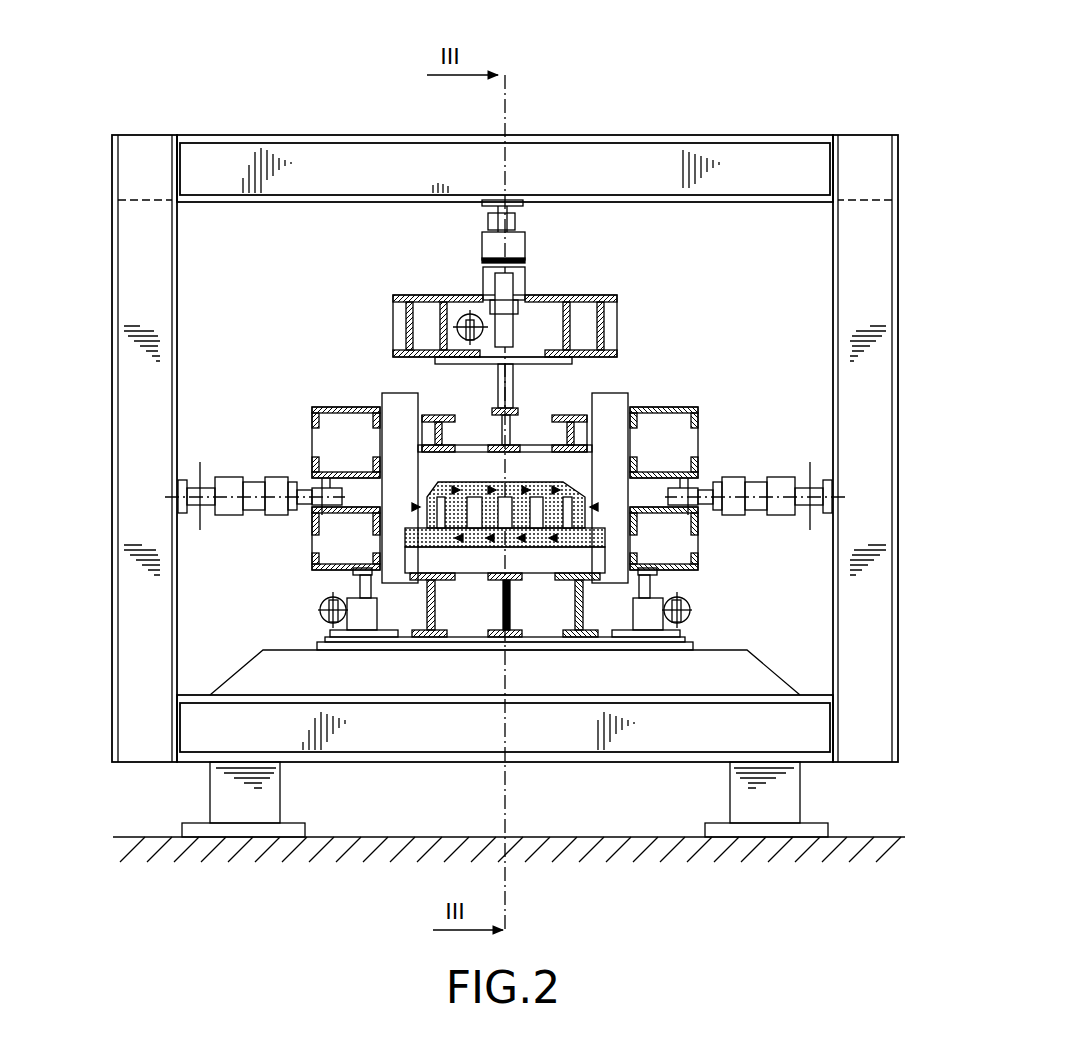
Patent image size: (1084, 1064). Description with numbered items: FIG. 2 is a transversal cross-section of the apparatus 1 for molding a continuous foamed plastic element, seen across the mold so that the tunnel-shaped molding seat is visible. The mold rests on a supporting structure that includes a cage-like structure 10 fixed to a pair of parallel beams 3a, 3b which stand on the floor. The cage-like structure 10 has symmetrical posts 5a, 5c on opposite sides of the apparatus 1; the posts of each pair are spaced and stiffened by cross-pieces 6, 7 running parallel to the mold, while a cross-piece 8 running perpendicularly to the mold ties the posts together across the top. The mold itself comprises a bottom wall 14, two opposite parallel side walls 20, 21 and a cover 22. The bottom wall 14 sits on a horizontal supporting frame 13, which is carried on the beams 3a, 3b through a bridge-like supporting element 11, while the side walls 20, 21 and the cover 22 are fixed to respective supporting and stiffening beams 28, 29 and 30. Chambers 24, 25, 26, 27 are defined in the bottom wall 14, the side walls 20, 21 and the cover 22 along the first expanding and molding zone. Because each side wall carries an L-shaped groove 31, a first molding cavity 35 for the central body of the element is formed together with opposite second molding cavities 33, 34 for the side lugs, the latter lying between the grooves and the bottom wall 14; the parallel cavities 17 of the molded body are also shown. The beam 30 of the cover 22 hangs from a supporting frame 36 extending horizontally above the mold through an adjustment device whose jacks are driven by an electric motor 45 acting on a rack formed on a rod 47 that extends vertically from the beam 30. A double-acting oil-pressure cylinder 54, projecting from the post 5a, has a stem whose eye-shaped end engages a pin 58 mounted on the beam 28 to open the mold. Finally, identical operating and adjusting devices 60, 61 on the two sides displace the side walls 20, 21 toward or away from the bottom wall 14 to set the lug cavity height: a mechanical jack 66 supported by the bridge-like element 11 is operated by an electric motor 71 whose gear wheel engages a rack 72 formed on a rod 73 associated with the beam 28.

The apparatus 1 is at (712, 106).
The beam 3a is at (275, 798).
The beam 3b is at (810, 798).
The post 5a is at (178, 508).
The post 5c is at (884, 420).
The cross-piece 6 is at (146, 158).
The cross-piece 7 is at (862, 162).
The cross-piece 8 is at (551, 136).
The cage-like structure 10 is at (298, 116).
The bridge-like supporting element 11 is at (252, 675).
The horizontal supporting frame 13 is at (568, 605).
The bottom wall 14 is at (474, 636).
The parallel cavities 17 is at (537, 547).
The side wall 20 is at (318, 393).
The side wall 21 is at (622, 394).
The cover 22 is at (474, 442).
The chamber 24 is at (472, 560).
The chamber 25 is at (546, 470).
The chamber 26 is at (392, 440).
The chamber 27 is at (620, 445).
The supporting and stiffening beam 28 is at (310, 412).
The supporting and stiffening beam 29 is at (668, 407).
The supporting and stiffening beam 30 is at (432, 404).
The L-shaped groove 31 is at (418, 503).
The second molding cavity 33 is at (449, 562).
The second molding cavity 34 is at (606, 542).
The first molding cavity 35 is at (553, 417).
The supporting frame 36 is at (586, 300).
The electric motor 45 is at (470, 320).
The rod 47 is at (508, 292).
The double-acting oil-pressure cylinder 54 is at (228, 516).
The pin 58 is at (315, 490).
The operating and adjusting device 60 is at (318, 582).
The operating and adjusting device 61 is at (715, 572).
The mechanical jack 66 is at (368, 627).
The electric motor 71 is at (320, 610).
The rack 72 is at (371, 586).
The rod 73 is at (350, 572).